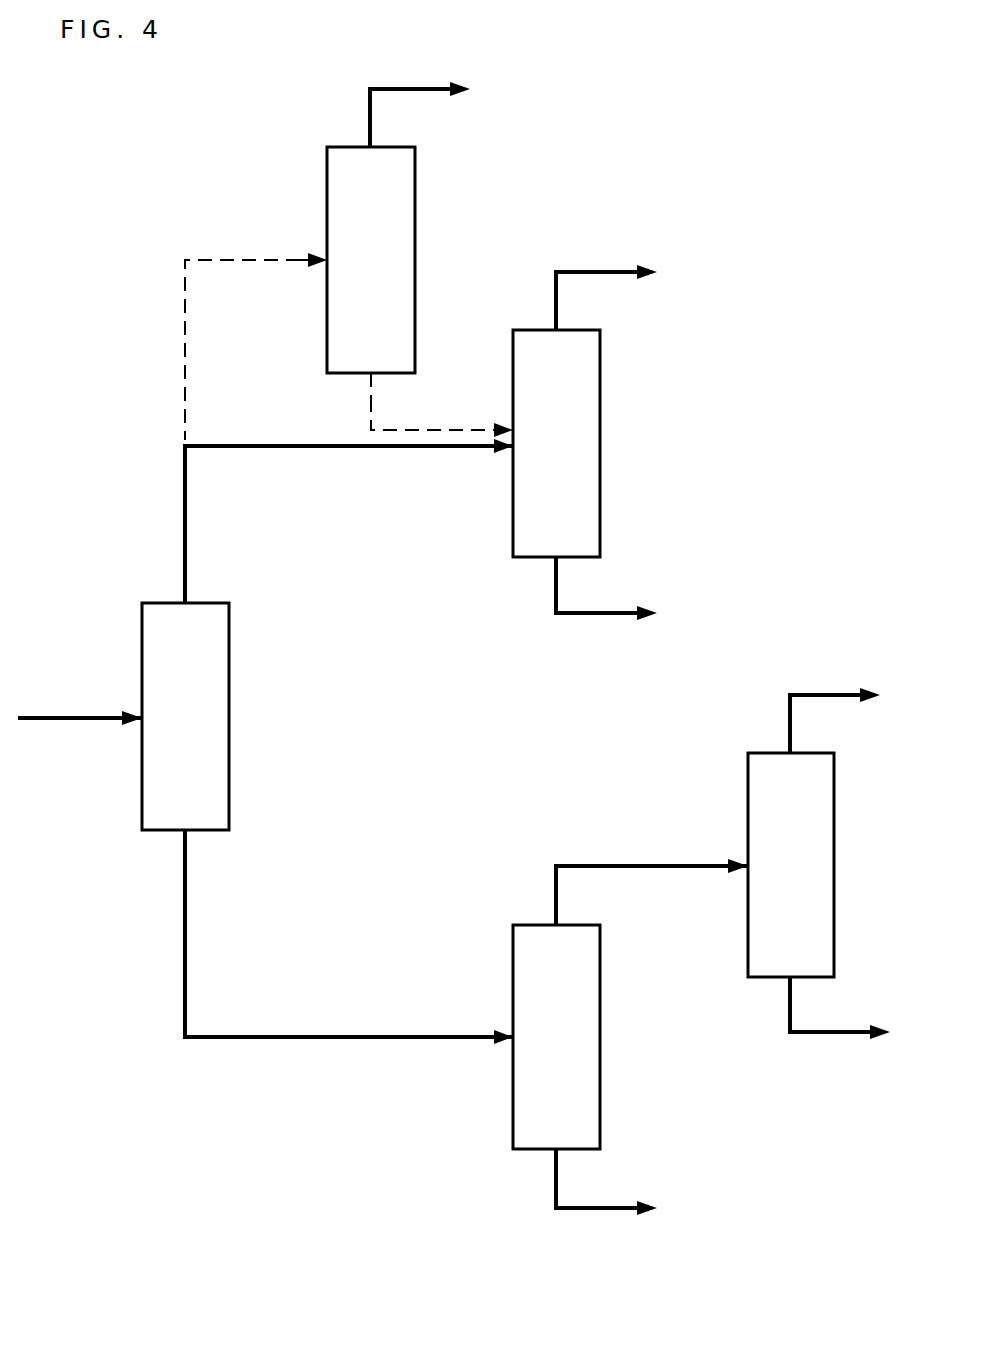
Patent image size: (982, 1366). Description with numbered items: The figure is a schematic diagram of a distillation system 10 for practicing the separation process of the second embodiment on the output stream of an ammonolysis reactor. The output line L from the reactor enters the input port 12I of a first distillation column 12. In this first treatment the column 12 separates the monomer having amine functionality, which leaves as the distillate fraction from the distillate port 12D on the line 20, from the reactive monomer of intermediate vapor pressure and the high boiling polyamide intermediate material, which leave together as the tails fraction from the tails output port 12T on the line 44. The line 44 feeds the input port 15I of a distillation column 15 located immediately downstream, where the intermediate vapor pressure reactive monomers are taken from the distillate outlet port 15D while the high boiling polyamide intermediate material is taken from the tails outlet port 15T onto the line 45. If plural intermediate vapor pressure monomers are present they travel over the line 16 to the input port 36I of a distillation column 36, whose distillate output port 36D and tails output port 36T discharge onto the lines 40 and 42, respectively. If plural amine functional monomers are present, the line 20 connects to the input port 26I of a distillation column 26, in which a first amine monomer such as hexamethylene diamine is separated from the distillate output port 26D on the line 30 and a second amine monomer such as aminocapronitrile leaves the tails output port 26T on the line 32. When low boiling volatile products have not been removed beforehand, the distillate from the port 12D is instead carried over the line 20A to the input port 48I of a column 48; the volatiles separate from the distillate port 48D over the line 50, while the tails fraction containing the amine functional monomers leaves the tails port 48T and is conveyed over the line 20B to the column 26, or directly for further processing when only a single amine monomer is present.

The distillation system 10 is at (760, 132).
The first distillation column 12 is at (203, 732).
The distillate port 12D is at (182, 600).
The input port 12I is at (140, 710).
The tails output port 12T is at (184, 835).
The output line L is at (80, 720).
The line 44 is at (187, 887).
The line 20 is at (315, 447).
The line 20A is at (185, 340).
The line 20B is at (370, 394).
The column 48 is at (388, 278).
The distillate port 48D is at (368, 142).
The input port 48I is at (323, 256).
The tails port 48T is at (372, 378).
The line 50 is at (448, 88).
The distillation column 26 is at (578, 457).
The distillate output port 26D is at (554, 328).
The input port 26I is at (511, 454).
The tails output port 26T is at (553, 561).
The line 30 is at (592, 270).
The line 32 is at (606, 616).
The distillation column 15 is at (574, 1054).
The distillate outlet port 15D is at (554, 922).
The input port 15I is at (512, 1045).
The tails outlet port 15T is at (553, 1152).
The line 16 is at (600, 864).
The line 45 is at (600, 1211).
The distillation column 36 is at (808, 881).
The distillate output port 36D is at (787, 750).
The input port 36I is at (745, 871).
The tails output port 36T is at (787, 980).
The line 40 is at (835, 693).
The line 42 is at (835, 1035).